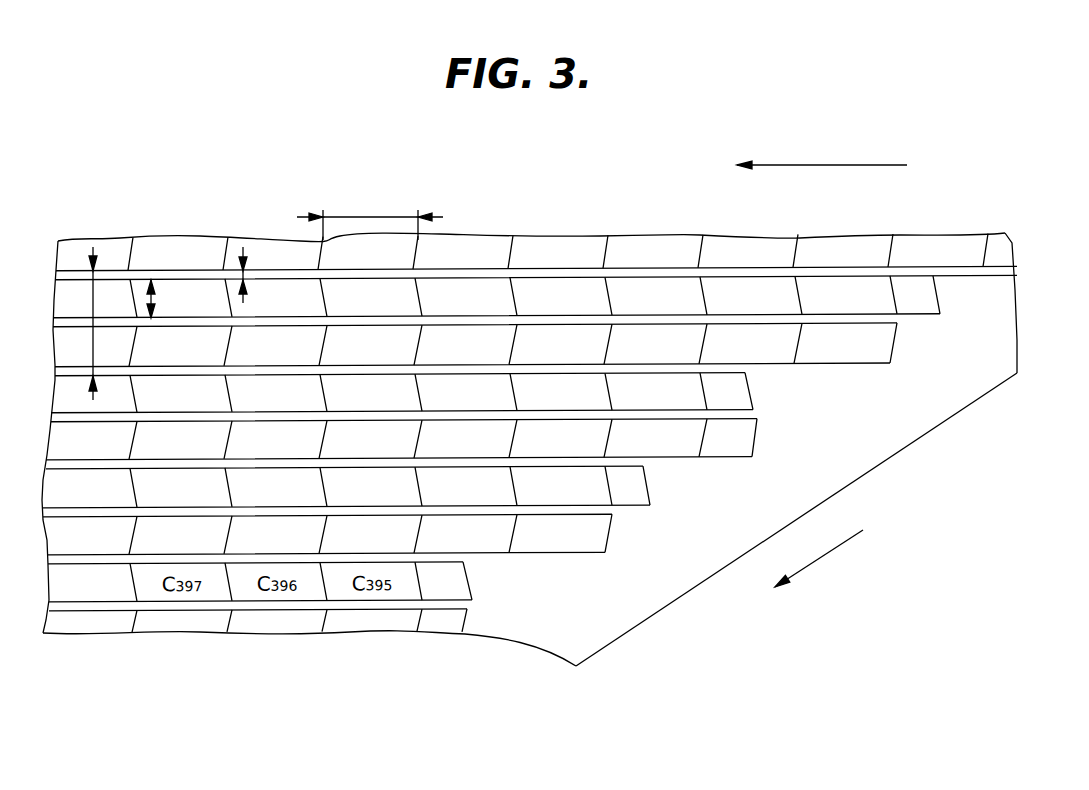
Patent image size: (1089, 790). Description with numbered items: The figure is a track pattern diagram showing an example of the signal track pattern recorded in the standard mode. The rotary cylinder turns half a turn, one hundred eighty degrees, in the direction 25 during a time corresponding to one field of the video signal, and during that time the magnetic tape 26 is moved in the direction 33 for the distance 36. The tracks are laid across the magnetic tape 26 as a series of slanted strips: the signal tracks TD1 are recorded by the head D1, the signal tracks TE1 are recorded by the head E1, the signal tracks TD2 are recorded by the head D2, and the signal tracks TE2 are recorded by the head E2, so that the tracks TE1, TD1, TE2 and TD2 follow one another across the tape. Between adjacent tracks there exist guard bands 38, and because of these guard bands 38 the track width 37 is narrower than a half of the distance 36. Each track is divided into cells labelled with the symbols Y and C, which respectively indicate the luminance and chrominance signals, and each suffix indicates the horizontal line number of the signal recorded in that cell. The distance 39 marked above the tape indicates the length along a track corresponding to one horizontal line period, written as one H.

The direction of rotation of the rotary cylinder 25 is at (829, 163).
The magnetic tape 26 is at (634, 610).
The tape moving direction 33 is at (818, 560).
The distance of tape movement 36 is at (95, 298).
The track width 37 is at (152, 298).
The guard band 38 is at (244, 272).
The distance corresponding to 1H 39 is at (385, 215).
The signal track recorded by head E1 TE1 is at (940, 287).
The signal track recorded by head D1 TD1 is at (900, 337).
The signal track recorded by head E2 TE2 is at (750, 387).
The signal track recorded by head D2 TD2 is at (758, 430).